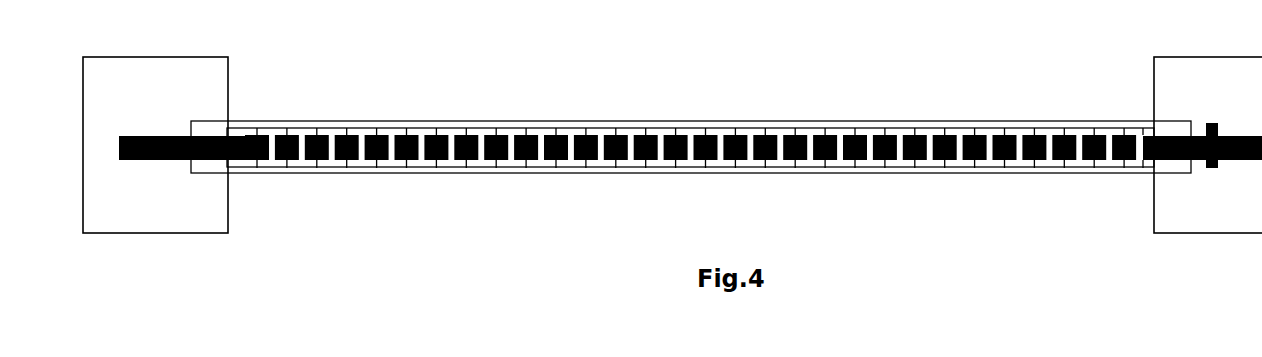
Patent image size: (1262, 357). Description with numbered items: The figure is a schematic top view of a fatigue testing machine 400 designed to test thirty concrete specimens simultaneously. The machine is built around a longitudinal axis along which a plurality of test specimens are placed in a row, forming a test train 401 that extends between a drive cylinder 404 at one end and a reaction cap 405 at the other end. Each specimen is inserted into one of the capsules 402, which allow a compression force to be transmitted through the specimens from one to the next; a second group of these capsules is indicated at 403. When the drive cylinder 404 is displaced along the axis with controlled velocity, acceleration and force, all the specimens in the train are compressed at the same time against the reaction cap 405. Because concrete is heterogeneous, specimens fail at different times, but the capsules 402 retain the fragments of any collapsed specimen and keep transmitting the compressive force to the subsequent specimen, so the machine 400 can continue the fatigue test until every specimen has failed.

The fatigue testing machine 400 is at (688, 24).
The test train 401 is at (687, 121).
The capsules 402 is at (510, 163).
The second group of light emitting cells 403 is at (913, 163).
The drive cylinder 404 is at (1210, 123).
The reaction cap 405 is at (177, 135).